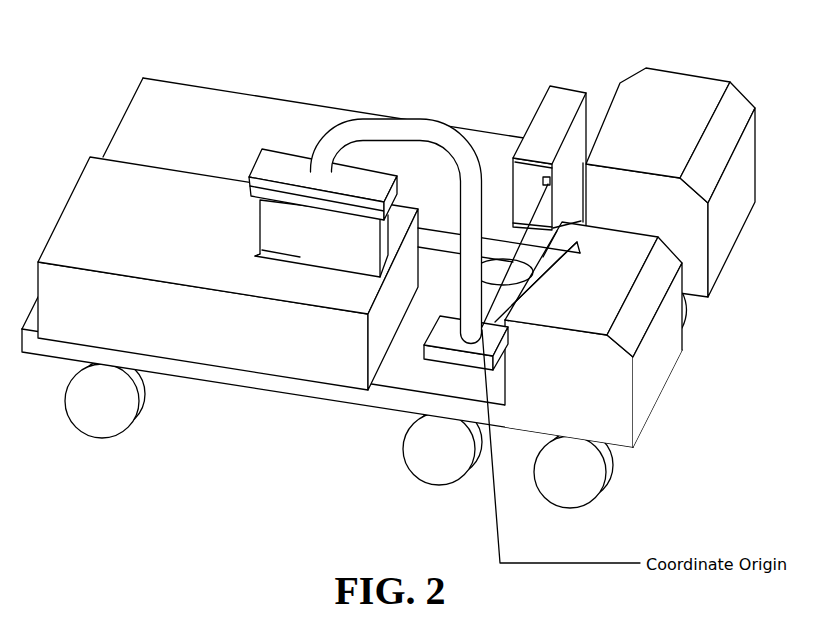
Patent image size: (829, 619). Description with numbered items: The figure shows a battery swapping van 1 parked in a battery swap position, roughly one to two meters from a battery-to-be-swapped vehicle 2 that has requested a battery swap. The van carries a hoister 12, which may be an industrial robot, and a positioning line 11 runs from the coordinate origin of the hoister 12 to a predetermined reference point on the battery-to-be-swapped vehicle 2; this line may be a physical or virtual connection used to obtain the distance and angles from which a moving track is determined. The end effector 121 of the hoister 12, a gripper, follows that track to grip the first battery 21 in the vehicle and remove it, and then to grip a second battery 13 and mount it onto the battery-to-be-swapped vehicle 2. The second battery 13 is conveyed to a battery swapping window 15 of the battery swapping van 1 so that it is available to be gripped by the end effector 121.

The battery swapping van 1 is at (663, 427).
The battery-to-be-swapped vehicle 2 is at (733, 69).
The positioning line 11 is at (519, 265).
The hoister 12 is at (398, 133).
The second battery 13 is at (368, 262).
The battery swapping window 15 is at (276, 258).
The first battery 21 is at (558, 107).
The end effector 121 is at (277, 163).